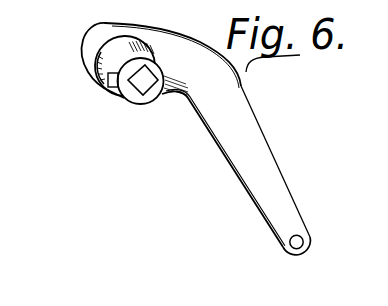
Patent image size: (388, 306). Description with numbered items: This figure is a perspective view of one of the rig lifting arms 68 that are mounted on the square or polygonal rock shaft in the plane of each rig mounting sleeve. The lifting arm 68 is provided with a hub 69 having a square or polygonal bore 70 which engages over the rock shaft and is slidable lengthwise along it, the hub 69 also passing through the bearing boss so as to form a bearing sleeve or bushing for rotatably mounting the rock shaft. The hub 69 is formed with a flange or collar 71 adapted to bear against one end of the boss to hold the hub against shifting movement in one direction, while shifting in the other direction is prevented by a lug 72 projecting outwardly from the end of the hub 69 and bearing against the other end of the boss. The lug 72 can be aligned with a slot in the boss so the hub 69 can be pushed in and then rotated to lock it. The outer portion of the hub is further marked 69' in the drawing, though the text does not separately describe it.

The rig lifting arm 68 is at (227, 83).
The hub 69 is at (97, 77).
The outer rim of socket head 69' is at (71, 57).
The square or polygonal bore 70 is at (143, 80).
The flange or collar 71 is at (80, 64).
The lug 72 is at (111, 86).